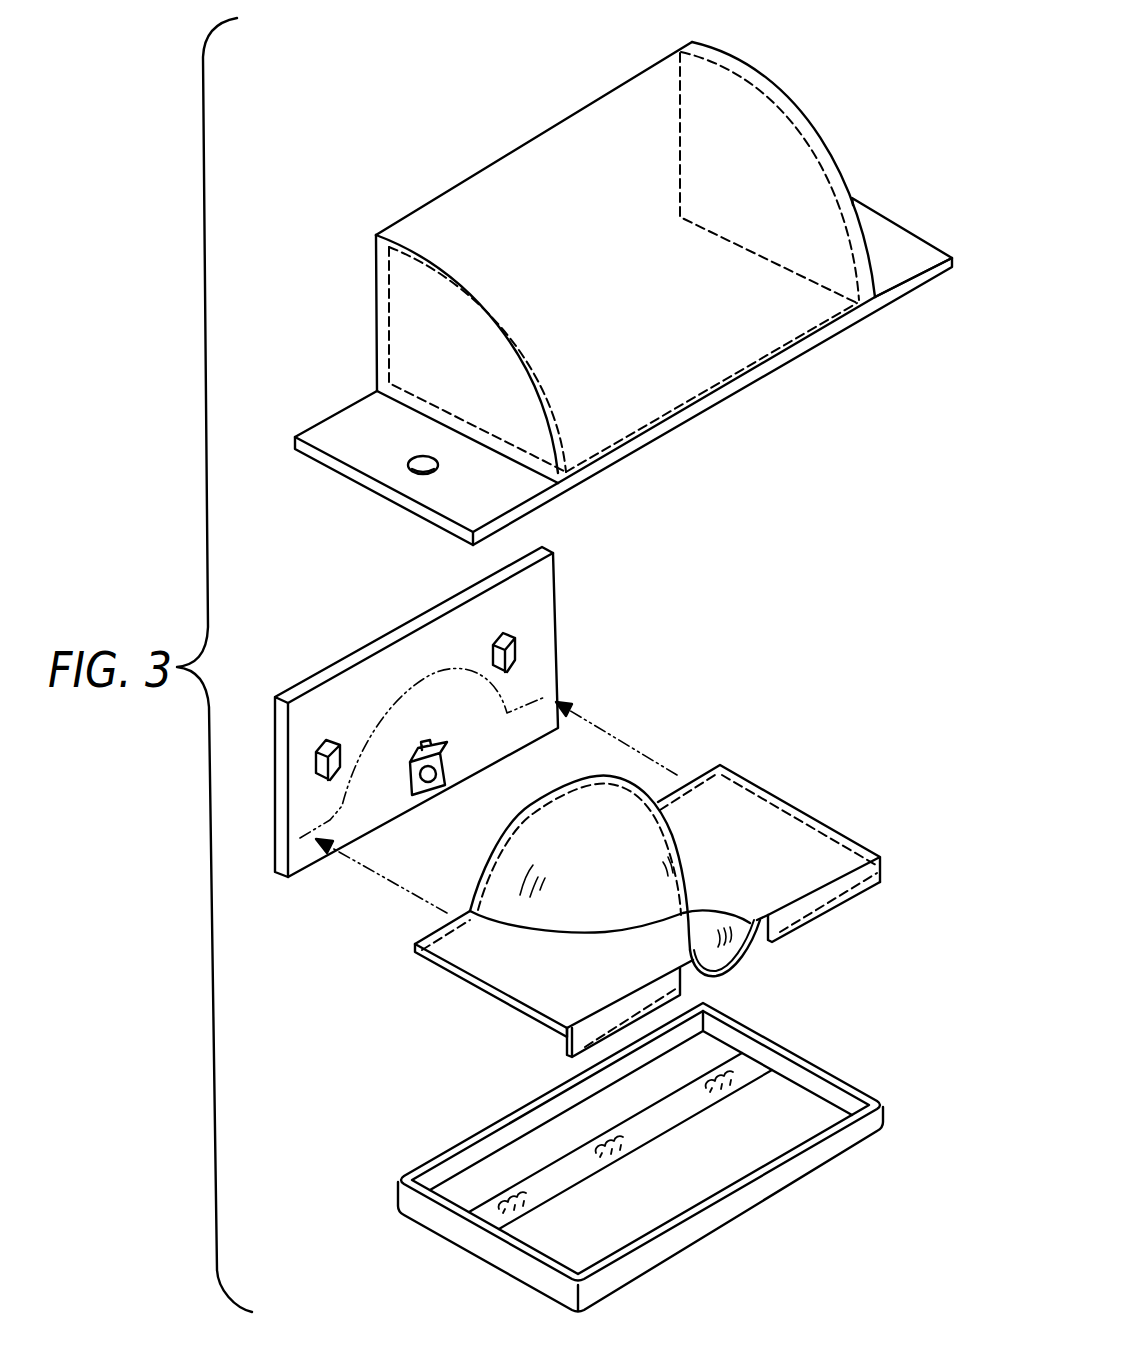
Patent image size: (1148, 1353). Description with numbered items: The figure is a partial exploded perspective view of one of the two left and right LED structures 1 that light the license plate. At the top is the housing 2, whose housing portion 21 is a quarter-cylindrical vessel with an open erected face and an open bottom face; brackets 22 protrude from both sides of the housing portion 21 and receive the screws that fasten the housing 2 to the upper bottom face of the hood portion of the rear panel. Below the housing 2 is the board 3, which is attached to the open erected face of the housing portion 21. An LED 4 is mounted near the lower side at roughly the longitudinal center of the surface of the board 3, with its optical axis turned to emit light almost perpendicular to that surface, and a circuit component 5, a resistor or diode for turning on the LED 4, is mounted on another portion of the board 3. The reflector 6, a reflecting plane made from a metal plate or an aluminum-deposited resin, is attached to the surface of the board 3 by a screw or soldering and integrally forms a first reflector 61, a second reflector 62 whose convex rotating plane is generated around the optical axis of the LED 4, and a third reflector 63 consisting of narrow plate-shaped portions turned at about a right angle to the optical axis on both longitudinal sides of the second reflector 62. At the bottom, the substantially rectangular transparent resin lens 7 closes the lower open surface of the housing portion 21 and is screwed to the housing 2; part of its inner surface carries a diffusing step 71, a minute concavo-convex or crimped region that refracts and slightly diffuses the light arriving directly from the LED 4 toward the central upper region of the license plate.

The LED structure 1 is at (766, 64).
The housing 2 is at (806, 357).
The housing portion 21 is at (695, 370).
The bracket 22 is at (340, 437).
The board 3 is at (543, 595).
The LED 4 is at (422, 788).
The circuit component 5 is at (516, 648).
The reflector 6 is at (788, 807).
The first reflector 61 is at (615, 815).
The second reflector 62 is at (722, 952).
The third reflector 63 is at (836, 899).
The lens 7 is at (763, 1197).
The diffusing step 71 is at (487, 1217).